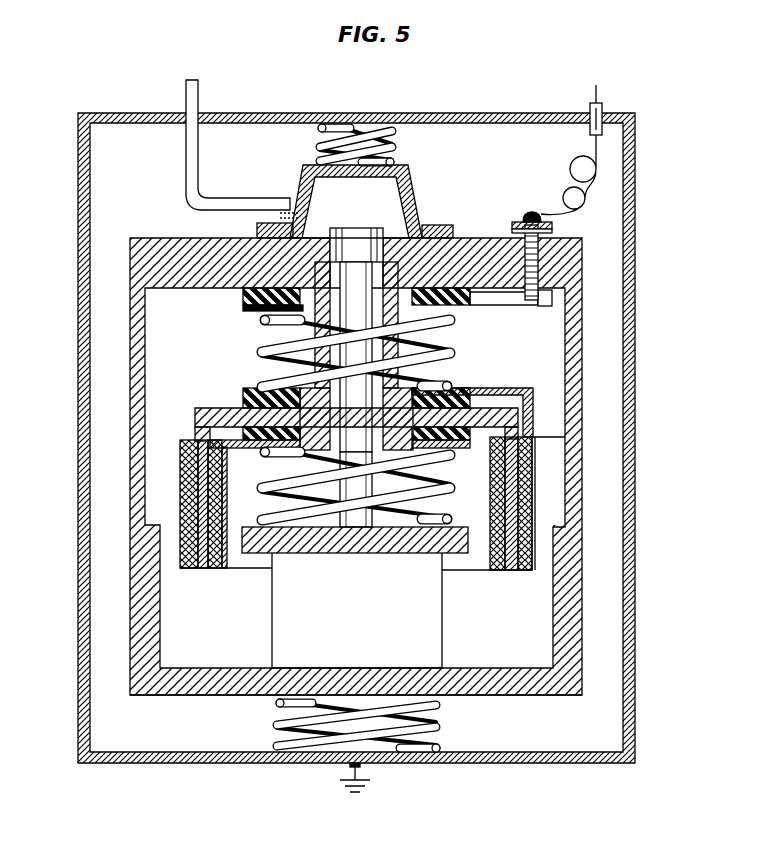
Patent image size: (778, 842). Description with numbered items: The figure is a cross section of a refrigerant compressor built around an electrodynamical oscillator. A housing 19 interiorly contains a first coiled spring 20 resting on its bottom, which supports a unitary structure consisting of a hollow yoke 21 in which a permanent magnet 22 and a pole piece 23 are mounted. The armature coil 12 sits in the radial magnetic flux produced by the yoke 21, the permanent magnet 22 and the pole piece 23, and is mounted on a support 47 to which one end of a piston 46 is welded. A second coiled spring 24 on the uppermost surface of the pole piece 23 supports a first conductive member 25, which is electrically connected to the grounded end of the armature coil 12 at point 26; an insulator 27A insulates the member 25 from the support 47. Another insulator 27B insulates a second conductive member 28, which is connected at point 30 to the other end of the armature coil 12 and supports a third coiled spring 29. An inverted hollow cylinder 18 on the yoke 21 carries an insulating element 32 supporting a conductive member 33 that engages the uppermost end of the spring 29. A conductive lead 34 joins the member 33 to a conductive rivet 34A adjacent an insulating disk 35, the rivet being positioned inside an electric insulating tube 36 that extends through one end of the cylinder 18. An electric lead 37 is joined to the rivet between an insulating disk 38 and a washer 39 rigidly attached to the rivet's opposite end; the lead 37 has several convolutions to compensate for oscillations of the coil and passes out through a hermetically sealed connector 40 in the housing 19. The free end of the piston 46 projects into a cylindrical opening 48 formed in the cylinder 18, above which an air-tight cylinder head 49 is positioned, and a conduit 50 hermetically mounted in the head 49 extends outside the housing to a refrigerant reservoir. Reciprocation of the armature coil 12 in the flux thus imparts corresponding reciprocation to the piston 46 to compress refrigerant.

The armature coil 12 is at (180, 492).
The inverted hollow cylinder 18 is at (130, 450).
The housing 19 is at (636, 378).
The first coiled spring 20 is at (438, 726).
The hollow yoke 21 is at (130, 617).
The permanent magnet 22 is at (272, 618).
The pole piece 23 is at (420, 553).
The second coiled spring 24 is at (445, 493).
The first conductive member 25 is at (470, 447).
The point 26 is at (227, 455).
The insulator 27A is at (296, 456).
The insulator 27B is at (447, 381).
The second conductive member 28 is at (243, 395).
The third coiled spring 29 is at (262, 350).
The point 30 is at (533, 437).
The insulating element 32 is at (243, 298).
The conductive member 33 is at (262, 313).
The conductive lead 34 is at (507, 306).
The conductive rivet 34A is at (533, 212).
The insulating disk 35 is at (547, 306).
The electric insulating tube 36 is at (545, 262).
The electric lead 37 is at (567, 192).
The insulating disk 38 is at (512, 231).
The washer 39 is at (520, 222).
The hermetically sealed connector 40 is at (603, 110).
The piston 46 is at (356, 262).
The support 47 is at (326, 455).
The cylindrical opening 48 is at (354, 240).
The cylinder head 49 is at (303, 180).
The conduit 50 is at (186, 88).